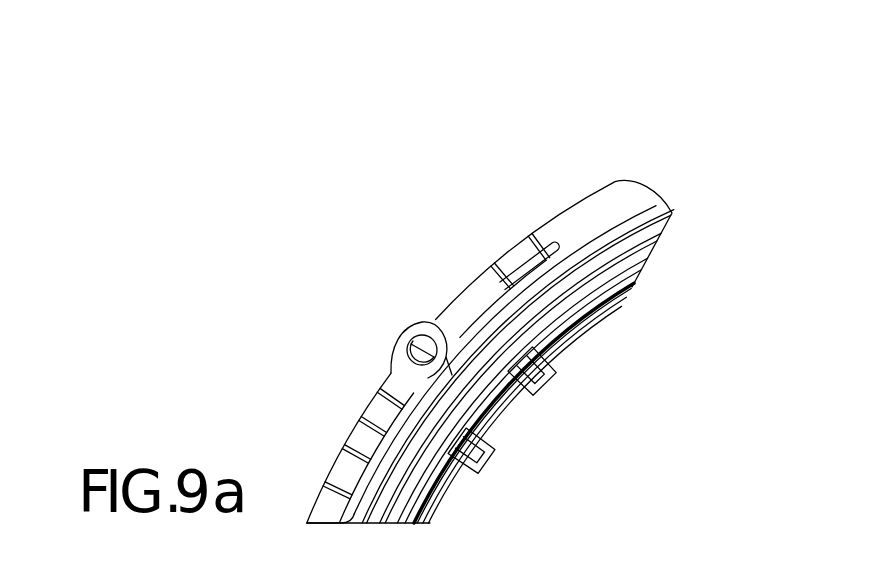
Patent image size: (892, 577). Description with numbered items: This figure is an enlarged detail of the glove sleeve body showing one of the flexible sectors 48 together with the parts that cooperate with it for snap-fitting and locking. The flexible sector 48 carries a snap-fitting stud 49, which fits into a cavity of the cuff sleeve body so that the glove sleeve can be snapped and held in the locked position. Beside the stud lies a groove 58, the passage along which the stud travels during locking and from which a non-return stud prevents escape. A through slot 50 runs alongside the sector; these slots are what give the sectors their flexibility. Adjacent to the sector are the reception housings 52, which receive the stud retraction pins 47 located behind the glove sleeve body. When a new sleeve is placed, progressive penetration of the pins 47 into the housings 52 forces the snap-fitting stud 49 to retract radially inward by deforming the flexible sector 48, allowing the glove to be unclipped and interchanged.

The stud retraction pin 47 is at (492, 462).
The flexible sector 48 is at (397, 368).
The snap-fitting stud 49 is at (407, 347).
The through slot 50 is at (548, 247).
The housing 52 is at (457, 300).
The groove 58 is at (423, 348).